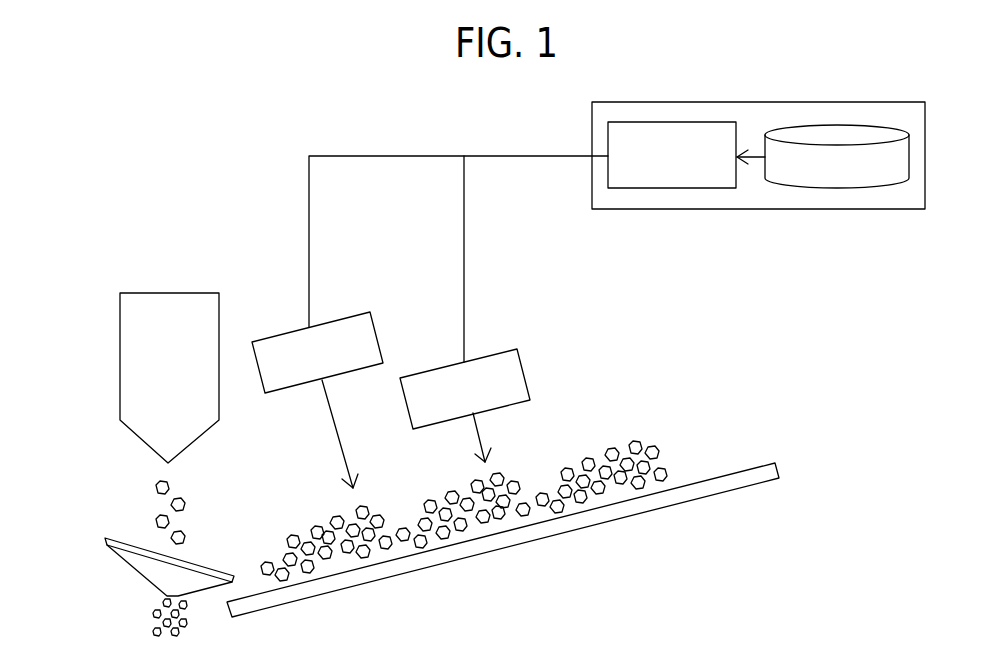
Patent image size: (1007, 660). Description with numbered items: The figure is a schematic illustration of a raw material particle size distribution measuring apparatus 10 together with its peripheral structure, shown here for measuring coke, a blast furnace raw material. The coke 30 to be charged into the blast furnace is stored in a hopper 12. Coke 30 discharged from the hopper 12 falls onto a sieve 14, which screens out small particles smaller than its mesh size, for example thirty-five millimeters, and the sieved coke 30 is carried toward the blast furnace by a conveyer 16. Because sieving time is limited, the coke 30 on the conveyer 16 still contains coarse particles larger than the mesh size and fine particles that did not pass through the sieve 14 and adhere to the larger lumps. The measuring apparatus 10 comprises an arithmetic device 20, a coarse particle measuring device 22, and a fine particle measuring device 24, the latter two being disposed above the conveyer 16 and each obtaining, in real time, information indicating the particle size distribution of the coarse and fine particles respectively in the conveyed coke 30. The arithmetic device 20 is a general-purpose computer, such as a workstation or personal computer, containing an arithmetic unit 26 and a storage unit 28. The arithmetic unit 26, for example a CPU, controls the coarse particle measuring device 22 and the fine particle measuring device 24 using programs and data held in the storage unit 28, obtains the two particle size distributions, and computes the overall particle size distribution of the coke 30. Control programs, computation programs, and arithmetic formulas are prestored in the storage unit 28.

The raw material particle size distribution measuring apparatus 10 is at (752, 243).
The hopper 12 is at (175, 293).
The sieve 14 is at (120, 557).
The conveyer 16 is at (733, 472).
The arithmetic device 20 is at (693, 209).
The coarse particle measuring device 22 is at (373, 333).
The fine particle measuring device 24 is at (523, 375).
The arithmetic unit 26 is at (677, 122).
The storage unit 28 is at (838, 125).
The coke 30 is at (650, 452).